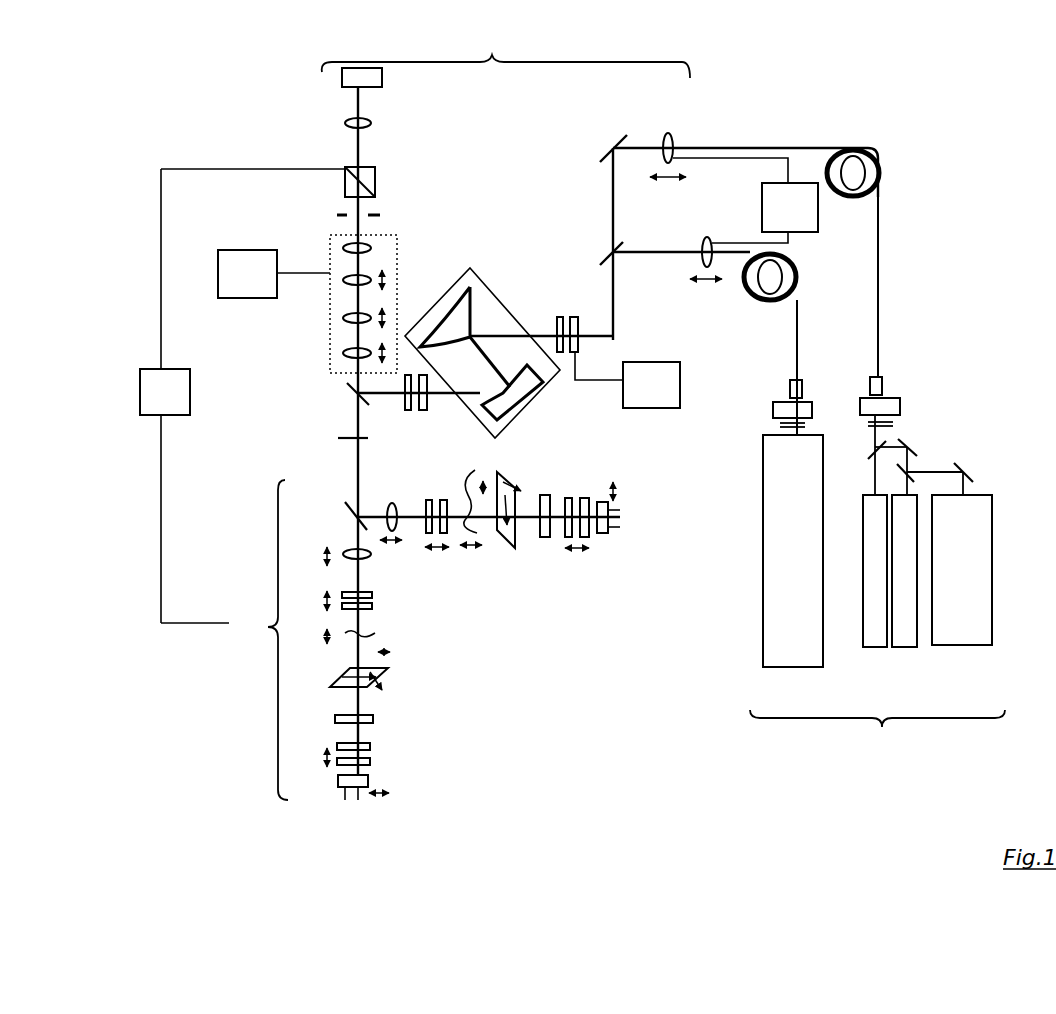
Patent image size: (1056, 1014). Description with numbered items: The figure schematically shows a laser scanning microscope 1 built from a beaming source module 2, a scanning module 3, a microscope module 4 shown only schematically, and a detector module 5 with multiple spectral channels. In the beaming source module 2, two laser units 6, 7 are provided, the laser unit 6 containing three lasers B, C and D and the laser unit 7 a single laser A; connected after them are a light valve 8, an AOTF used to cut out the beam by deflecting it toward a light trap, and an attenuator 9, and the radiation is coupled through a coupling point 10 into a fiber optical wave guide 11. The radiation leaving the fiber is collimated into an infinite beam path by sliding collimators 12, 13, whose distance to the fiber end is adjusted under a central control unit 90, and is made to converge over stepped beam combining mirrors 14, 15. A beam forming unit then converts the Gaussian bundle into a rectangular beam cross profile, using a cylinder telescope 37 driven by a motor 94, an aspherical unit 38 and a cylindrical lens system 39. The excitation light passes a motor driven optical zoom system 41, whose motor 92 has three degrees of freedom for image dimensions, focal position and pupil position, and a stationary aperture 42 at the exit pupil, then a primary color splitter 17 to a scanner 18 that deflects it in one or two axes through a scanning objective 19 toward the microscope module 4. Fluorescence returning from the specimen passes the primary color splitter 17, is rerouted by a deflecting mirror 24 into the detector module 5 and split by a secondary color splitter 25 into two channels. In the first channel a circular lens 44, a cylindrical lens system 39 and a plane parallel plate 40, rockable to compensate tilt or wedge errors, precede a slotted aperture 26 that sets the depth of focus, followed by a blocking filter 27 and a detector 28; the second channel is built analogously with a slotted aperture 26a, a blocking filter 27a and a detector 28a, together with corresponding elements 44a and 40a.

The laser scanning microscope 1 is at (632, 788).
The beaming source module 2 is at (877, 742).
The scanning module 3 is at (506, 48).
The microscope module 4 is at (342, 75).
The detector module 5 is at (260, 640).
The laser unit 6 is at (995, 660).
The laser unit 7 is at (763, 652).
The light valve 8 is at (895, 425).
The attenuator 9 is at (900, 406).
The coupling point 10 is at (884, 380).
The fiber optical wave guide 11 is at (880, 314).
The collimator 12 is at (672, 134).
The collimator 13 is at (712, 240).
The beam combining mirror 14 is at (613, 140).
The beam combining mirror 15 is at (606, 243).
The primary color splitter 17 is at (352, 392).
The scanner 18 is at (345, 182).
The scanning objective 19 is at (372, 123).
The deflecting mirror 24 is at (352, 437).
The secondary color splitter 25 is at (347, 510).
The slotted aperture 26 is at (512, 550).
The slotted aperture 26a is at (392, 676).
The blocking filter 27 is at (545, 540).
The blocking filter 27a is at (375, 719).
The detector 28 is at (607, 536).
The detector 28a is at (342, 790).
The cylinder telescope 37 is at (581, 305).
The aspherical unit 38 is at (540, 392).
The cylindrical lens system 39 is at (427, 420).
The plane parallel plate 40 is at (481, 496).
The filter 40a is at (380, 633).
The optical zoom system 41 is at (330, 327).
The aperture 42 is at (372, 214).
The circular lens 44 is at (392, 503).
The lens 44a is at (362, 558).
The central control unit 90 is at (152, 405).
The motor 92 is at (234, 287).
The motor 94 is at (638, 398).